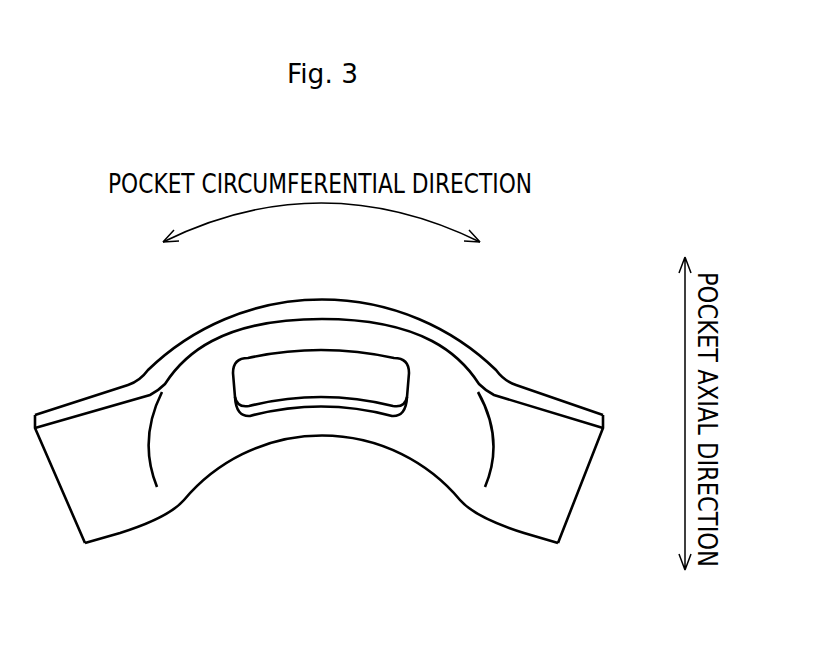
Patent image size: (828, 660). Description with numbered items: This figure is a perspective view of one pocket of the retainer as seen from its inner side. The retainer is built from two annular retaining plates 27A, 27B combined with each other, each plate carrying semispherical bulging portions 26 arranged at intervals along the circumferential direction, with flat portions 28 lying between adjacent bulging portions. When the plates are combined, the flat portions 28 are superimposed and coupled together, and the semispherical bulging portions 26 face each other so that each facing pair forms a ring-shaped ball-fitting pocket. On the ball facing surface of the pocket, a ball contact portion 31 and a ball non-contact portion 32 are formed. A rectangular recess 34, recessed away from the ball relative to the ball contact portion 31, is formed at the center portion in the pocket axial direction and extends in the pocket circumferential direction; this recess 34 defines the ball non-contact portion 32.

The semispherical bulging portion 26 is at (372, 305).
The annular retaining plate 27A is at (477, 333).
The annular retaining plate 27B is at (462, 373).
The flat portion 28 is at (110, 515).
The ball contact portion 31 is at (200, 440).
The ball non-contact portion 32 is at (290, 383).
The rectangular recess 34 is at (368, 382).